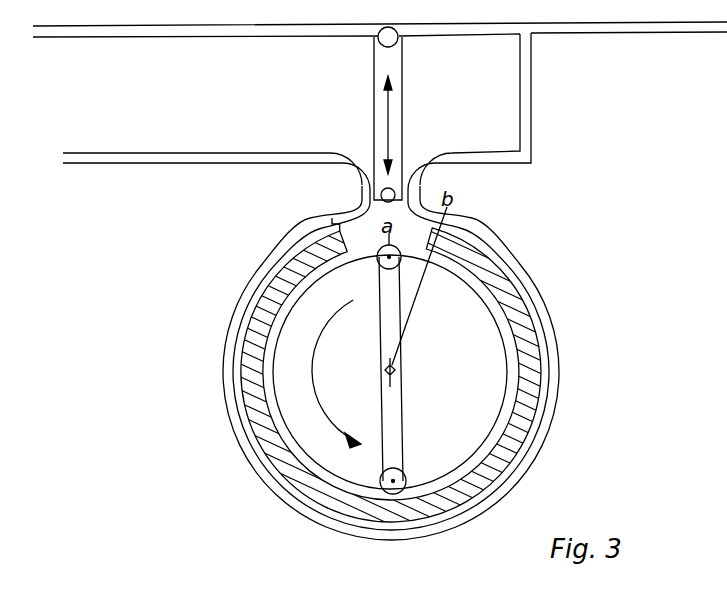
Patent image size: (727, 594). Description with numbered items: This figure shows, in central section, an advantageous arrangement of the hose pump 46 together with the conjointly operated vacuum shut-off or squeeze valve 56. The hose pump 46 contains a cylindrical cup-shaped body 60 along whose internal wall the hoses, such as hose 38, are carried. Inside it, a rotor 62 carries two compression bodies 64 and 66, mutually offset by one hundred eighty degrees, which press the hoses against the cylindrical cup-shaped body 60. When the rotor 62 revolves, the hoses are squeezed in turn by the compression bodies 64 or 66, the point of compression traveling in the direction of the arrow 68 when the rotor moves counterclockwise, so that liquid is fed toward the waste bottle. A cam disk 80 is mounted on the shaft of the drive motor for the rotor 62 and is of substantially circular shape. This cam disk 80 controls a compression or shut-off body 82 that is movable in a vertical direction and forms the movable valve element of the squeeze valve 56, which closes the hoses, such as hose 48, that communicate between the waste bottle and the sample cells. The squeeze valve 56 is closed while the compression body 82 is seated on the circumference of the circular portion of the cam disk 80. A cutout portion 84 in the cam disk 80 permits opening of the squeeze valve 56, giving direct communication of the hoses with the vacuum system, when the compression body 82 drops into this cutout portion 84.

The hose 38 is at (186, 166).
The hose pump 46 is at (475, 327).
The hose 48 is at (241, 38).
The squeeze valve 56 is at (405, 100).
The cylindrical cup-shaped body 60 is at (481, 252).
The rotor 62 is at (396, 400).
The compression body 64 is at (380, 266).
The compression body 66 is at (401, 473).
The arrow 68 is at (320, 398).
The cam disk 80 is at (548, 347).
The compression body 82 is at (396, 146).
The cutout portion 84 is at (337, 222).